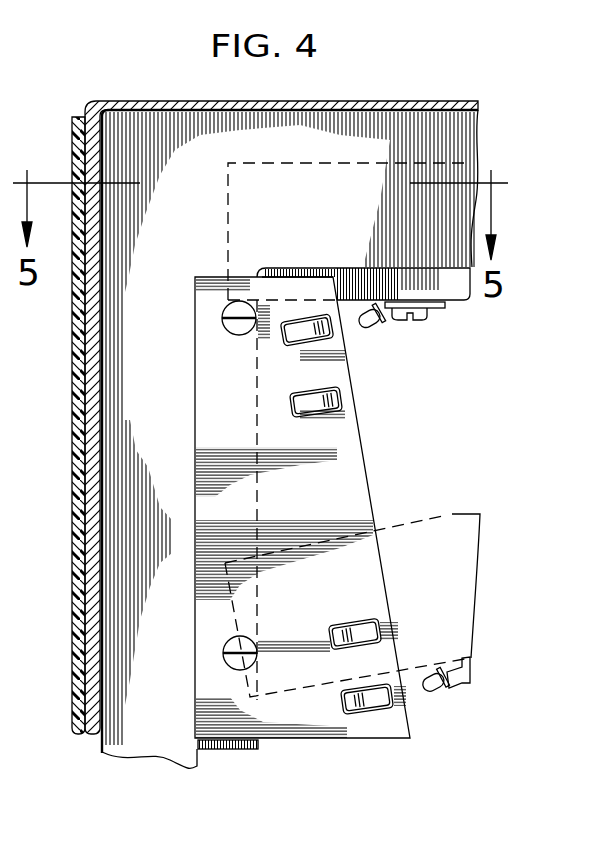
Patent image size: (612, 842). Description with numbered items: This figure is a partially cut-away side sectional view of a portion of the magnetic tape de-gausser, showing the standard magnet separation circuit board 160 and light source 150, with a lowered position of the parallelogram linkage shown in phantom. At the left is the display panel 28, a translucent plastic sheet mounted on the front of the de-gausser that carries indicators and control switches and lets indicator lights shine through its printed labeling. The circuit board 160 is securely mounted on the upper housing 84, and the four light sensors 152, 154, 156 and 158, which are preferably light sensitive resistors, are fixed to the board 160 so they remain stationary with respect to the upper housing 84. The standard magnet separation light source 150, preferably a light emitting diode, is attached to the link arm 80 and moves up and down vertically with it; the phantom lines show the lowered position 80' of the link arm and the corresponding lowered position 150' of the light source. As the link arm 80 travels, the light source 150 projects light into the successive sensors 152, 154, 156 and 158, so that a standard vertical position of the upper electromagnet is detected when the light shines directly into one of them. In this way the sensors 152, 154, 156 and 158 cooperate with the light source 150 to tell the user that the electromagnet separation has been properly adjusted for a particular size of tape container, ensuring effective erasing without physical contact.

The display panel 28 is at (71, 459).
The upper housing 84 is at (187, 100).
The link arm 80 is at (356, 431).
The lowered position of link arm 80' is at (352, 589).
The standard magnet separation light source 150 is at (383, 336).
The lowered position of light source 150' is at (452, 707).
The light sensor 152 is at (285, 345).
The light sensor 154 is at (292, 416).
The light sensor 156 is at (345, 622).
The light sensor 158 is at (345, 700).
The standard magnet separation circuit board 160 is at (367, 484).